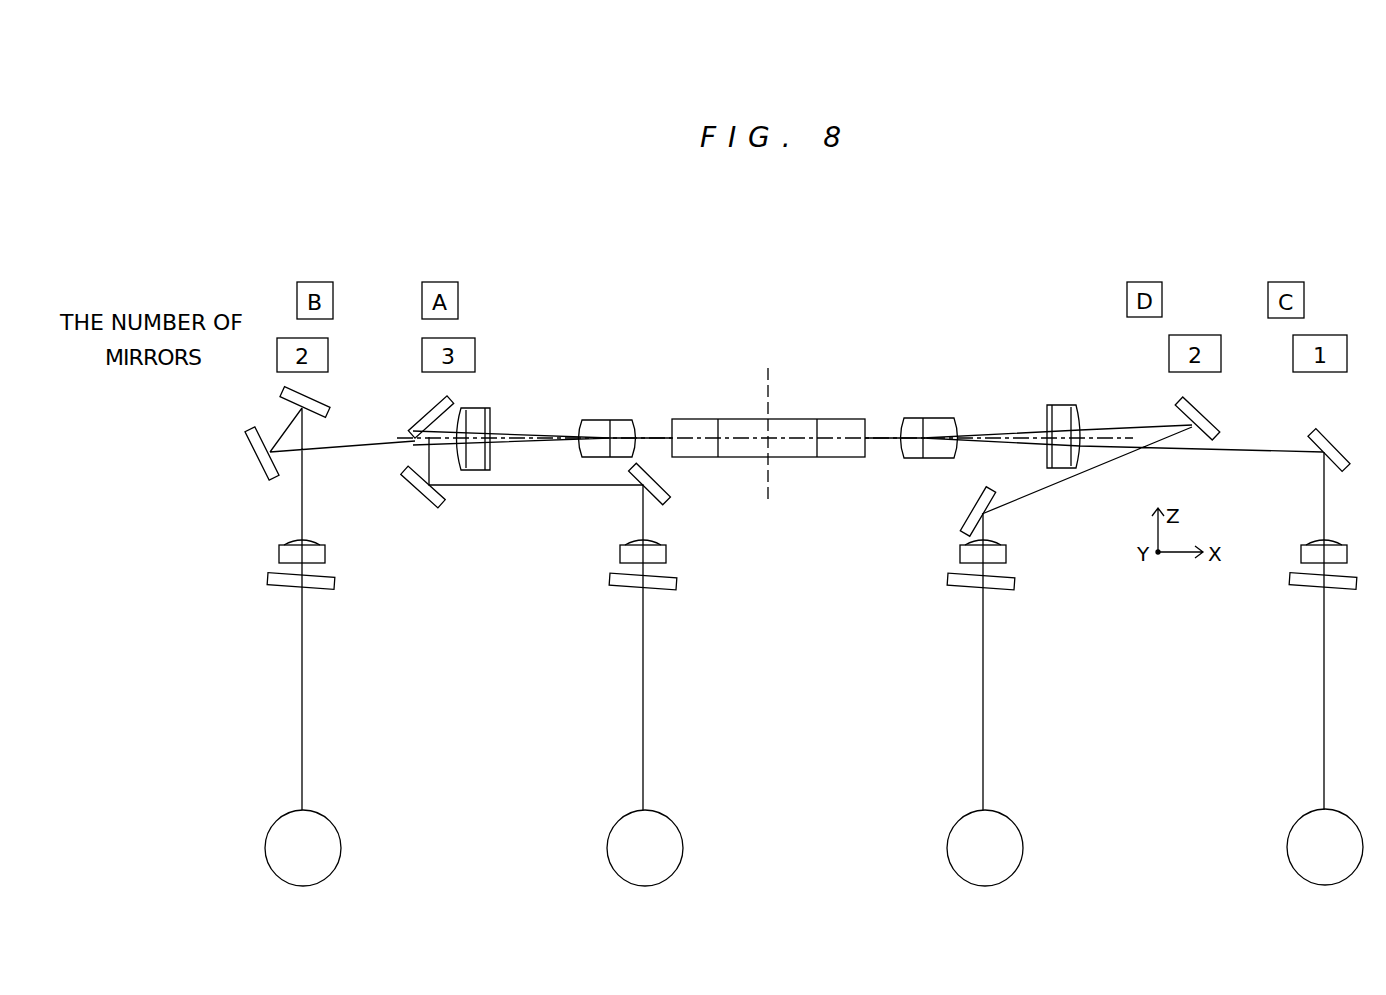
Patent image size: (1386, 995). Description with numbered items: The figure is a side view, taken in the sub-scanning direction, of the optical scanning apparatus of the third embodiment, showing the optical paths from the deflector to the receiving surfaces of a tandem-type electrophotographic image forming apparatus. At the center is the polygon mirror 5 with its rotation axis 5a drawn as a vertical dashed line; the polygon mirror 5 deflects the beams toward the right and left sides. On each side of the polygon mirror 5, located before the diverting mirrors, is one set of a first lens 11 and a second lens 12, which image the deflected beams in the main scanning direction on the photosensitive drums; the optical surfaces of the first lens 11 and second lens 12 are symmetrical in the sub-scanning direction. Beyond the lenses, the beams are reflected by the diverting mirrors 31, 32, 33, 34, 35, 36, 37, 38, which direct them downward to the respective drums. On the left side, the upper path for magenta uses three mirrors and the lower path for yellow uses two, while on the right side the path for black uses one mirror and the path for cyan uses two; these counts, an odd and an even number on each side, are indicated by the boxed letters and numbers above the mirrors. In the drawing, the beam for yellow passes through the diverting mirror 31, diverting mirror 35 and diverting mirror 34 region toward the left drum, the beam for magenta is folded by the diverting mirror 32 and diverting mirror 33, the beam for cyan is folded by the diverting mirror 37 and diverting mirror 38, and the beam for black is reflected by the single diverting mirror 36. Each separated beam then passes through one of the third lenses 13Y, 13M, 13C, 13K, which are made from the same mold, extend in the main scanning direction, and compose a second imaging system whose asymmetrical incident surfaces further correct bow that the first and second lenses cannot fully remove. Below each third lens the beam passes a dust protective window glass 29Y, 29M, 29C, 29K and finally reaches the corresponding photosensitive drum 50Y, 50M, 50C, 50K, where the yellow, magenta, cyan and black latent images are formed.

The polygon mirror 5 is at (842, 418).
The rotation axis 5a is at (767, 395).
The first lens 11 is at (597, 420).
The second lens 12 is at (478, 408).
The third lens 13Y is at (327, 553).
The third lens 13M is at (668, 552).
The third lens 13C is at (958, 550).
The third lens 13K is at (1300, 553).
The dust protective window glass 29Y is at (315, 592).
The dust protective window glass 29M is at (662, 587).
The dust protective window glass 29C is at (1000, 588).
The dust protective window glass 29K is at (1300, 587).
The diverting mirror 31 is at (413, 410).
The diverting mirror 32 is at (413, 493).
The diverting mirror 33 is at (667, 482).
The diverting mirror 34 is at (320, 397).
The diverting mirror 35 is at (257, 458).
The diverting mirror 36 is at (1327, 433).
The diverting mirror 37 is at (1215, 420).
The diverting mirror 38 is at (975, 512).
The photosensitive drum 50Y is at (343, 833).
The photosensitive drum 50M is at (678, 822).
The photosensitive drum 50C is at (1008, 813).
The photosensitive drum 50K is at (1297, 818).